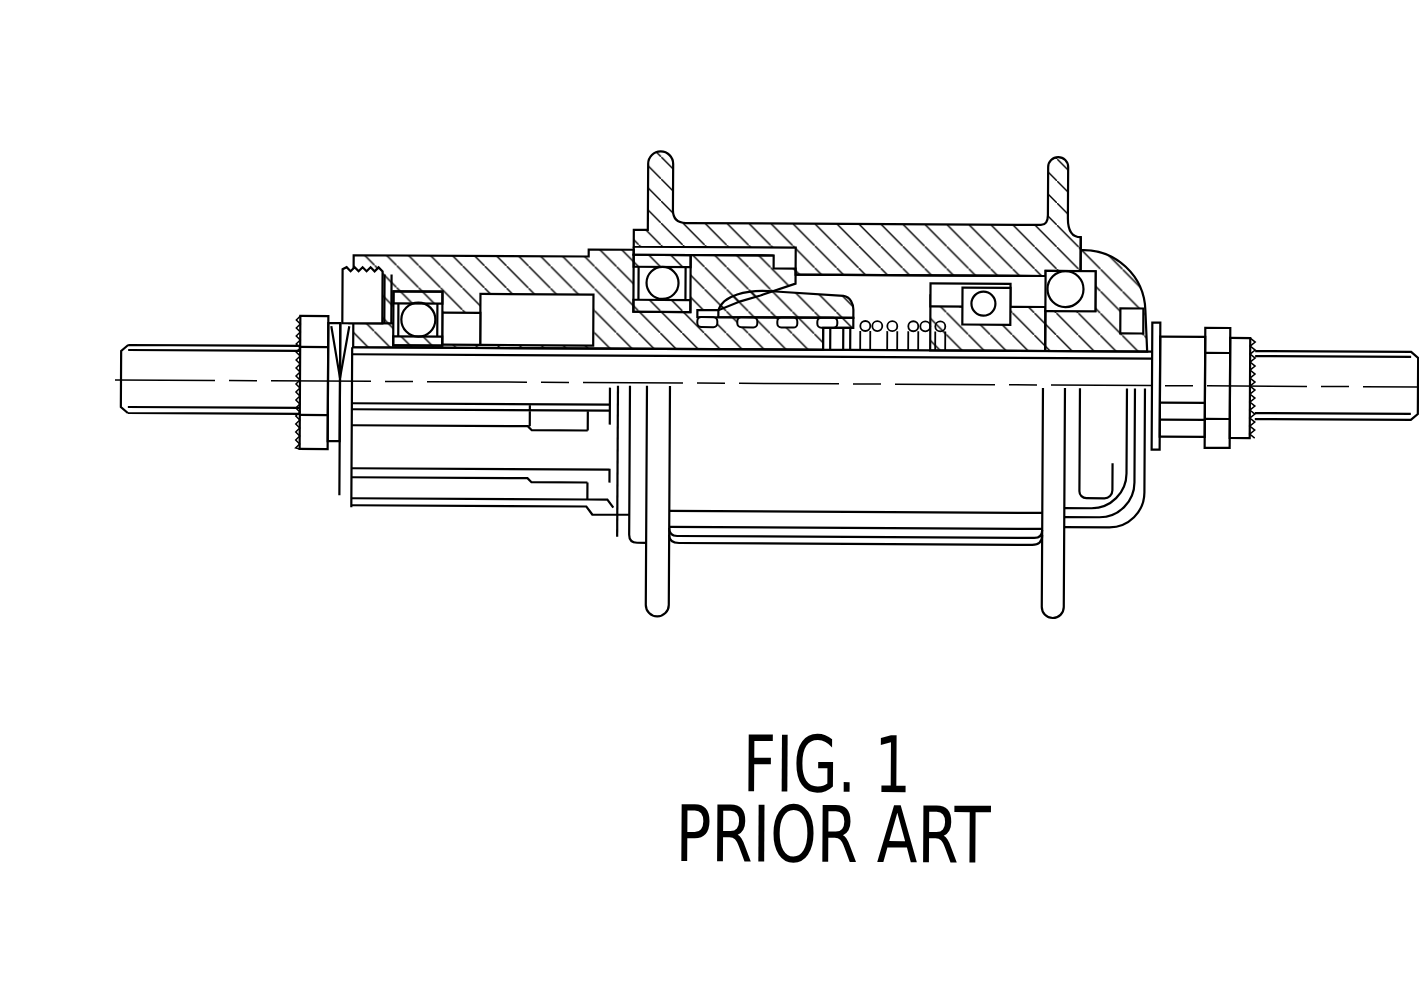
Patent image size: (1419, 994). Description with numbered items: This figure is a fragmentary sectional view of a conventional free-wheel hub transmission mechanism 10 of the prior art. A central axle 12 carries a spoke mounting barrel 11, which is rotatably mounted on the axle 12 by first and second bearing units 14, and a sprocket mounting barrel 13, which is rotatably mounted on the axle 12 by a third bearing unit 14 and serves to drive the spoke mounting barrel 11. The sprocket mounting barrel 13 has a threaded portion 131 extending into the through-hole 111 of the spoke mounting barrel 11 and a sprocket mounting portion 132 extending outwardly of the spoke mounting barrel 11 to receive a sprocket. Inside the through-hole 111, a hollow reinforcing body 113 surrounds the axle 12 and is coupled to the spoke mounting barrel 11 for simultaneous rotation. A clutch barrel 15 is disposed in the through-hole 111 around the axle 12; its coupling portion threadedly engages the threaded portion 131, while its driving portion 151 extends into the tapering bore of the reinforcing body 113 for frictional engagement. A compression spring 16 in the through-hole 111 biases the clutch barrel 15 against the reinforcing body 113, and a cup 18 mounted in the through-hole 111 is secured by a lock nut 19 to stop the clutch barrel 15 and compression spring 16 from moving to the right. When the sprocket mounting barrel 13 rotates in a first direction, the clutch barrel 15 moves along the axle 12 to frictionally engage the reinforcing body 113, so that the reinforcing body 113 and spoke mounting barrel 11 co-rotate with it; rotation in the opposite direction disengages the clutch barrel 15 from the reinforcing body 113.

The free-wheel hub transmission mechanism 10 is at (1072, 185).
The spoke mounting barrel 11 is at (858, 147).
The through-hole 111 is at (900, 274).
The hollow reinforcing body 113 is at (740, 256).
The axle 12 is at (1383, 343).
The sprocket mounting barrel 13 is at (597, 355).
The threaded portion 131 is at (758, 333).
The sprocket mounting portion 132 is at (446, 240).
The bearing unit 14 is at (412, 296).
The clutch barrel 15 is at (882, 196).
The driving portion 151 is at (748, 289).
The compression spring 16 is at (865, 318).
The cup 18 is at (1097, 312).
The lock nut 19 is at (1188, 342).